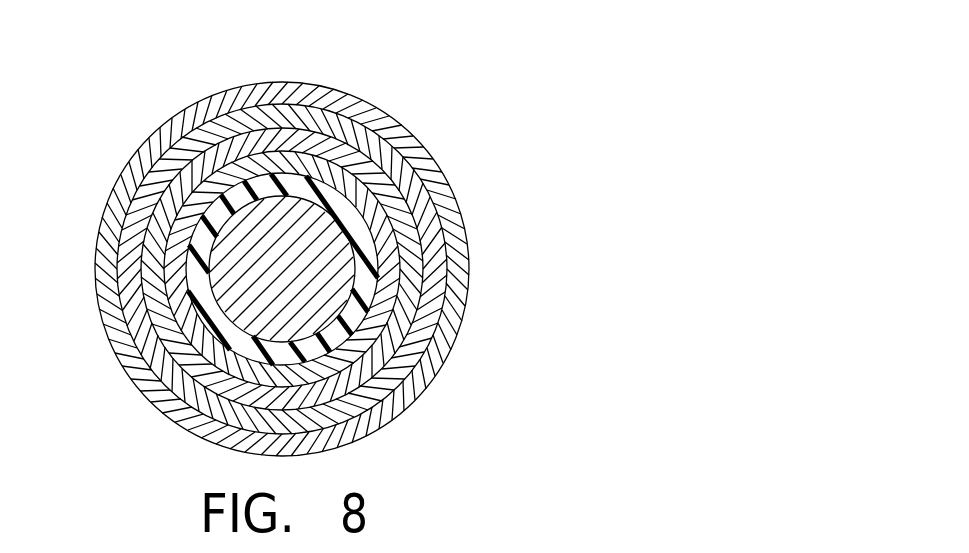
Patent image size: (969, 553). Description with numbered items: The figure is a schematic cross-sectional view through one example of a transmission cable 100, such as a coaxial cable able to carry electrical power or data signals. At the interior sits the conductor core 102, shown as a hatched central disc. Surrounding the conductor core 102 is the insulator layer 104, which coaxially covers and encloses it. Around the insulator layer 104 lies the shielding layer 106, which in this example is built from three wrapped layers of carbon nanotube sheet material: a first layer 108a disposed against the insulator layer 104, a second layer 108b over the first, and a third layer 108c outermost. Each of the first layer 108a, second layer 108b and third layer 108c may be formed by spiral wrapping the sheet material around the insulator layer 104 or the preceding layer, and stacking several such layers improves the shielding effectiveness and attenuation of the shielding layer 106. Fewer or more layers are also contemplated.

The cable 100 is at (350, 239).
The conductor core 102 is at (220, 303).
The insulator layer 104 is at (370, 330).
The shielding layer 106 is at (383, 269).
The first layer 108a is at (428, 247).
The second layer 108b is at (435, 210).
The third layer 108c is at (435, 165).